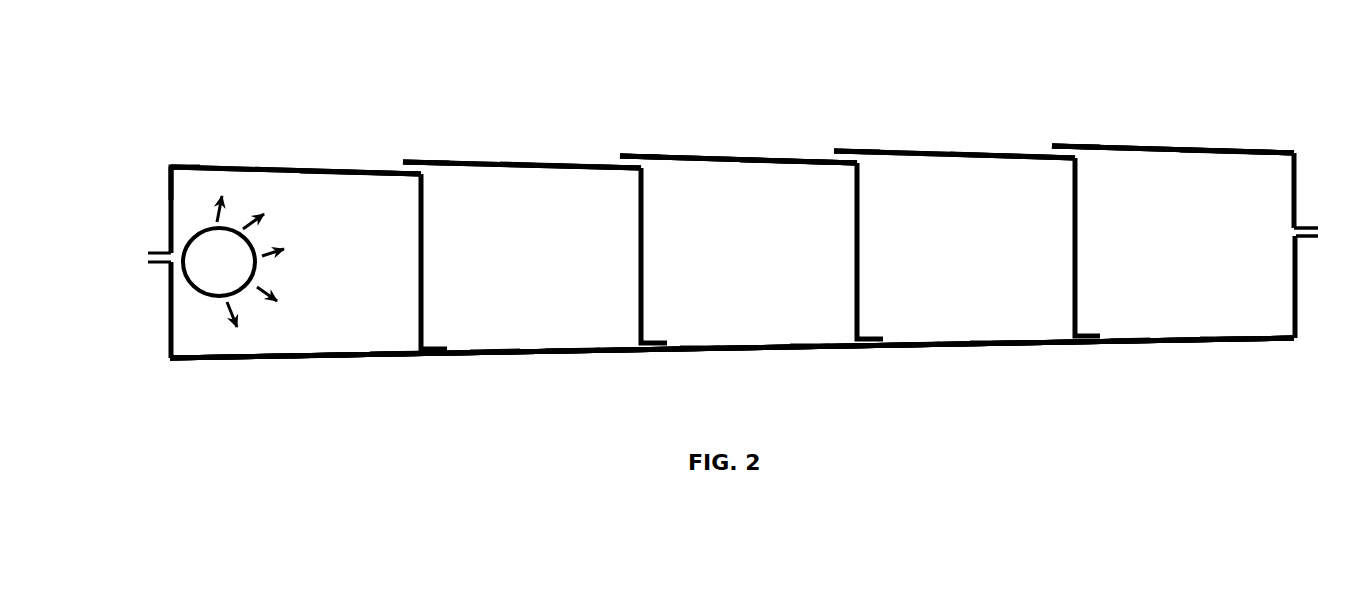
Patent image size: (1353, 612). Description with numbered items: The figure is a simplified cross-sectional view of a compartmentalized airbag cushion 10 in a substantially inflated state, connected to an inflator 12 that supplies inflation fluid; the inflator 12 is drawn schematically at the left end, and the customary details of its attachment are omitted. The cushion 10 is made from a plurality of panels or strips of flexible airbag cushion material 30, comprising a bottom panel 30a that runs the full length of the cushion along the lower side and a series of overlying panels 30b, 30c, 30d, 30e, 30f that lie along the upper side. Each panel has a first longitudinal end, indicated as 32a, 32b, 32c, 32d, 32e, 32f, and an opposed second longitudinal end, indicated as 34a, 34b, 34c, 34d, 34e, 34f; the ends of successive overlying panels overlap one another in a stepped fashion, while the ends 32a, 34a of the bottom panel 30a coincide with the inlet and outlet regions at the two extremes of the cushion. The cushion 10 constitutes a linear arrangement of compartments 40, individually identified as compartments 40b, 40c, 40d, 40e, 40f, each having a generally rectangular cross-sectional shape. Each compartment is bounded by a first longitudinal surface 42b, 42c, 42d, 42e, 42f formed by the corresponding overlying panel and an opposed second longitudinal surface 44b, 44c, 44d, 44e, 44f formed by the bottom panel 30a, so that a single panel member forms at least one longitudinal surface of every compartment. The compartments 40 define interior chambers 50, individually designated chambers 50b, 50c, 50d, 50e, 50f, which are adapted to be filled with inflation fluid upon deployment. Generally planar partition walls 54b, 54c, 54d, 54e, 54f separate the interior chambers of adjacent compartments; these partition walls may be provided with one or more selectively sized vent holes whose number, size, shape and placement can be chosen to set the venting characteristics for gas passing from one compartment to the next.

The airbag cushion 10 is at (1107, 93).
The inflator 12 is at (197, 234).
The flexible airbag cushion material 30 is at (723, 157).
The bottom panel 30a is at (736, 350).
The overlying panel 30b is at (340, 170).
The overlying panel 30c is at (472, 161).
The overlying panel 30d is at (780, 160).
The overlying panel 30e is at (900, 153).
The overlying panel 30f is at (1160, 150).
The first longitudinal end 32a is at (150, 265).
The first longitudinal end 32b is at (150, 252).
The first longitudinal end 32c is at (405, 160).
The first longitudinal end 32d is at (630, 152).
The first longitudinal end 32e is at (840, 150).
The first longitudinal end 32f is at (1055, 146).
The second longitudinal end 34a is at (1309, 245).
The second longitudinal end 34b is at (445, 349).
The second longitudinal end 34c is at (665, 344).
The second longitudinal end 34d is at (882, 339).
The second longitudinal end 34e is at (1098, 336).
The second longitudinal end 34f is at (1310, 225).
The compartments 40 is at (242, 365).
The compartment 40b is at (385, 357).
The compartment 40c is at (560, 354).
The compartment 40d is at (797, 350).
The compartment 40e is at (985, 347).
The compartment 40f is at (1215, 342).
The first longitudinal surface 42b is at (265, 166).
The first longitudinal surface 42c is at (535, 164).
The first longitudinal surface 42d is at (676, 157).
The first longitudinal surface 42e is at (968, 154).
The first longitudinal surface 42f is at (1215, 151).
The second longitudinal surface 44b is at (322, 358).
The second longitudinal surface 44c is at (485, 355).
The second longitudinal surface 44d is at (700, 352).
The second longitudinal surface 44e is at (915, 348).
The second longitudinal surface 44f is at (1128, 344).
The interior chambers 50 is at (1262, 182).
The interior chamber 50b is at (296, 215).
The interior chamber 50c is at (522, 210).
The interior chamber 50d is at (738, 203).
The interior chamber 50e is at (954, 200).
The interior chamber 50f is at (1173, 196).
The partition wall 54b is at (418, 283).
The partition wall 54c is at (640, 278).
The partition wall 54d is at (856, 272).
The partition wall 54e is at (1073, 268).
The partition wall 54f is at (1290, 210).